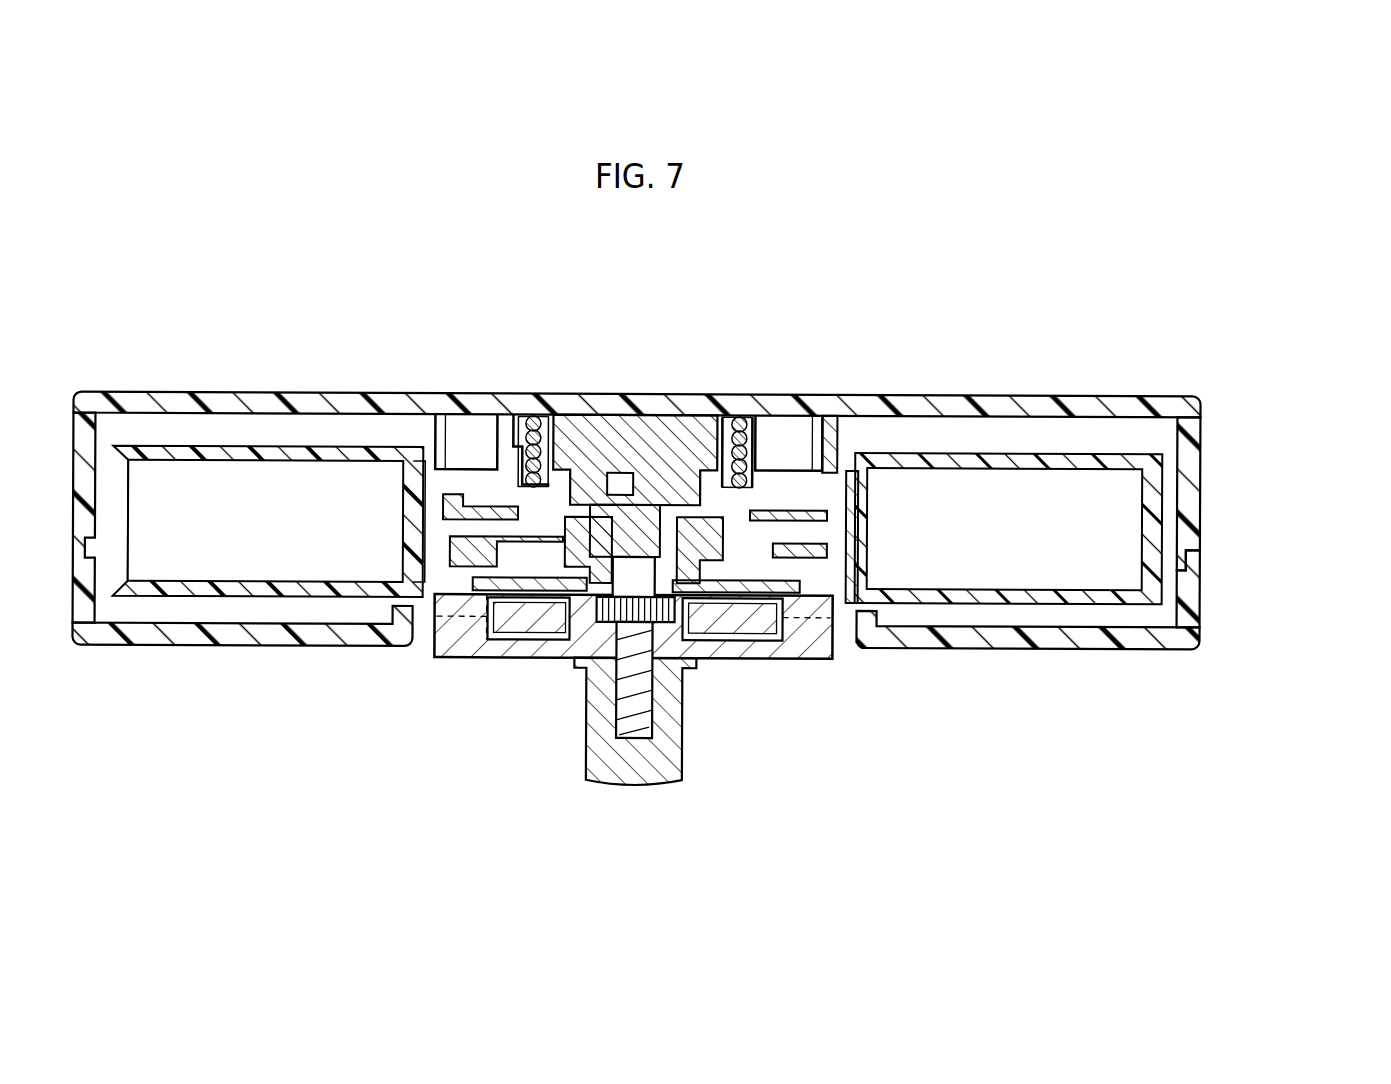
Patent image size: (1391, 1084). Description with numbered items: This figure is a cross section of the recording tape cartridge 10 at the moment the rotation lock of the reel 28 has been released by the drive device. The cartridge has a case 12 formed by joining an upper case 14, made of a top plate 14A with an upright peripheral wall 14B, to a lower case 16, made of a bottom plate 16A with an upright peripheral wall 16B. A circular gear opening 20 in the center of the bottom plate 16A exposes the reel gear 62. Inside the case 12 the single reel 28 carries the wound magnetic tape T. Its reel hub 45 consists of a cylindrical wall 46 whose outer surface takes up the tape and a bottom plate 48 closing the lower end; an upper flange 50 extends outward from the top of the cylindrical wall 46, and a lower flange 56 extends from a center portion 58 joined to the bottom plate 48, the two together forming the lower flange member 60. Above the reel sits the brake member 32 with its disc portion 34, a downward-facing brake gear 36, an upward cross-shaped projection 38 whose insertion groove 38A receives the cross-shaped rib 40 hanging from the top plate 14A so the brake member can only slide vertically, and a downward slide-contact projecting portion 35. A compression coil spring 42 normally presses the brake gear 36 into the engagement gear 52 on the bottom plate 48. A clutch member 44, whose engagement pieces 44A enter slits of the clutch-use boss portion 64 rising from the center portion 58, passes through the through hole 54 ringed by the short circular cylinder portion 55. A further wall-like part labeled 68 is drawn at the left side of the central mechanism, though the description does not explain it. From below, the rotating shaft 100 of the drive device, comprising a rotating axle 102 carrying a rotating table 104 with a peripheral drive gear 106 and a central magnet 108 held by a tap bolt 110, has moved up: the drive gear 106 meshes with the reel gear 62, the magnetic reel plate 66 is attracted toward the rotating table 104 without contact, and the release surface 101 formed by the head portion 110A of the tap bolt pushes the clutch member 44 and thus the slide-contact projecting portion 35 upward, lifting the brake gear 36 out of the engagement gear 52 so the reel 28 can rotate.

The recording tape cartridge 10 is at (1030, 284).
The case 12 is at (731, 529).
The upper case 14 is at (709, 471).
The top plate 14A is at (1150, 392).
The peripheral wall 14B is at (1237, 494).
The lower case 16 is at (707, 616).
The bottom plate 16A is at (1135, 648).
The peripheral wall 16B is at (1195, 595).
The gear opening 20 is at (642, 673).
The reel 28 is at (945, 440).
The brake member 32 is at (830, 465).
The disc portion 34 is at (487, 475).
The slide-contact projecting portion 35 is at (530, 455).
The brake gear 36 is at (462, 500).
The cross-shaped projection 38 is at (742, 450).
The insertion groove 38A is at (678, 435).
The cross-shaped rib 40 is at (598, 460).
The compression coil spring 42 is at (785, 470).
The clutch member 44 is at (568, 598).
The engagement pieces 44A is at (523, 610).
The reel hub 45 is at (851, 537).
The cylindrical wall 46 is at (865, 540).
The bottom plate 48 is at (869, 558).
The upper flange 50 is at (1030, 455).
The engagement gear 52 is at (862, 524).
The through hole 54 is at (700, 600).
The short circular cylinder portion 55 is at (722, 598).
The lower flange 56 is at (1050, 635).
The center portion 58 is at (872, 640).
The lower flange member 60 is at (962, 627).
The reel gear 62 is at (795, 600).
The clutch-use boss portion 64 is at (465, 647).
The reel plate 66 is at (540, 600).
The wall 68 is at (425, 440).
The rotating shaft 100 is at (630, 715).
The release surface 101 is at (622, 480).
The rotating axle 102 is at (672, 748).
The rotating table 104 is at (437, 650).
The drive gear 106 is at (800, 640).
The magnet 108 is at (482, 618).
The tap bolt 110 is at (593, 696).
The head portion 110A is at (615, 725).
The magnetic tape T is at (1080, 488).